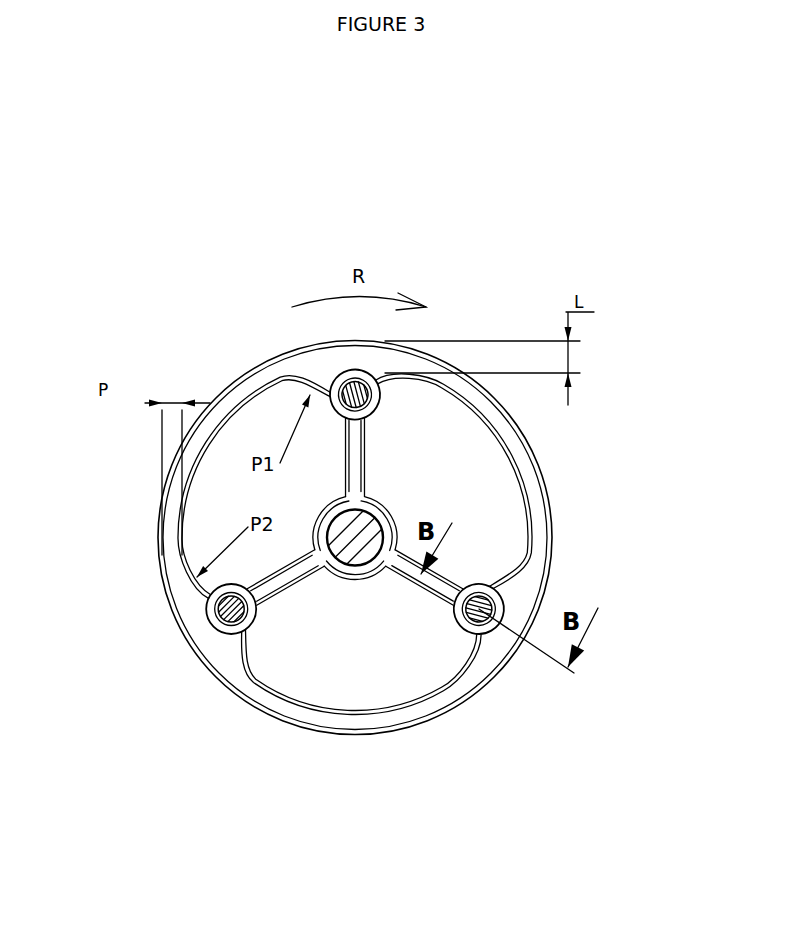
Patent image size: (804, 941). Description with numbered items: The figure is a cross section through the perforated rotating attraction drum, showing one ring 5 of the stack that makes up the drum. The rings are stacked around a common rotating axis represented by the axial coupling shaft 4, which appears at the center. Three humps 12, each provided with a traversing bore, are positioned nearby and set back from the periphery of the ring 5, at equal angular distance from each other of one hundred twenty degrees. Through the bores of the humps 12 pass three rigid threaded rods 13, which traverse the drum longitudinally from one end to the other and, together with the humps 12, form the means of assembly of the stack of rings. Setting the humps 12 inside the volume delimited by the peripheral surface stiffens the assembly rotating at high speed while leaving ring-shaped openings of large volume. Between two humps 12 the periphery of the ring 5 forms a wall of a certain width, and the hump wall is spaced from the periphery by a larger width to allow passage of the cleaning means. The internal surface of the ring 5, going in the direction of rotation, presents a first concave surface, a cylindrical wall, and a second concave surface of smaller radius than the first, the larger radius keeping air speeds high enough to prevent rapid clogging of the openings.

The axial coupling shaft 4 is at (360, 542).
The ring 5 is at (518, 590).
The hump 12 is at (232, 632).
The rigid threaded rod 13 is at (228, 607).